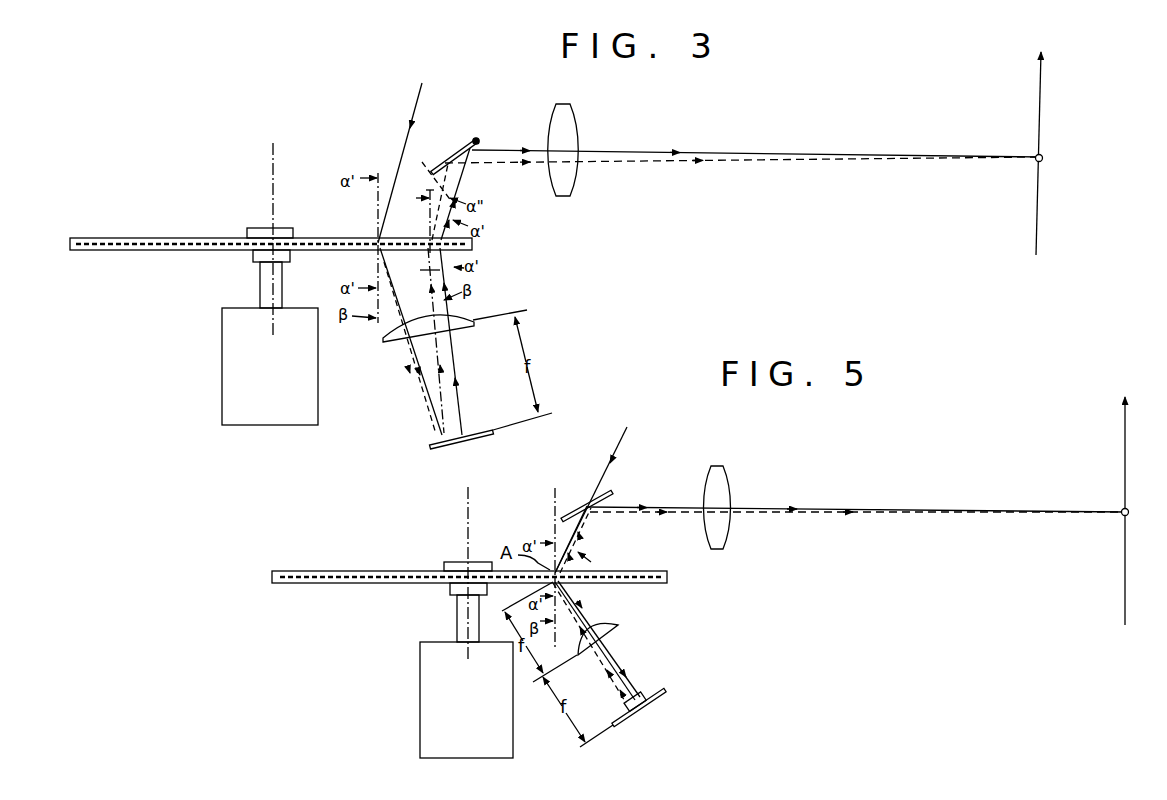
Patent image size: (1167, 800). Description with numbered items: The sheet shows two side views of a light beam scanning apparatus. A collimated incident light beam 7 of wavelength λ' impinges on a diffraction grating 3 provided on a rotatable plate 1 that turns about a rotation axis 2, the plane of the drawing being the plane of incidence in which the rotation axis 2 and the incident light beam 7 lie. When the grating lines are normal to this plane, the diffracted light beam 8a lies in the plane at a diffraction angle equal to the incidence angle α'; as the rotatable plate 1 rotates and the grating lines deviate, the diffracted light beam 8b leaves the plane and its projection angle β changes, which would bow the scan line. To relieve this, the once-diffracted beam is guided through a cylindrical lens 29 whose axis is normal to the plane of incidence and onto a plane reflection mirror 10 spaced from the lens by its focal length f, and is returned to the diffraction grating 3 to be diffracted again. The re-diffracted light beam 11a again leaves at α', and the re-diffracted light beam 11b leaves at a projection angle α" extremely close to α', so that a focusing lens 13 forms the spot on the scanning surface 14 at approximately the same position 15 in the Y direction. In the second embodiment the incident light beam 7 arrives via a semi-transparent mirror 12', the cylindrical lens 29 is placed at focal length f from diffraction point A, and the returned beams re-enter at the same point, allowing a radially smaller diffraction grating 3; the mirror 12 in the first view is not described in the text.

In FIG. 3, the rotatable plate 1 is at (471, 245).
In FIG. 5, the rotatable plate 1 is at (272, 578).
In FIG. 3, the rotation axis 2 is at (268, 162).
In FIG. 5, the rotation axis 2 is at (465, 507).
In FIG. 3, the diffraction grating 3 is at (395, 239).
In FIG. 5, the diffraction grating 3 is at (612, 572).
In FIG. 3, the incident light beam 7 is at (417, 103).
In FIG. 5, the incident light beam 7 is at (620, 442).
In FIG. 3, the light beam 8a is at (468, 294).
In FIG. 5, the light beam 8a is at (585, 613).
In FIG. 3, the light beam 8b is at (476, 302).
In FIG. 5, the light beam 8b is at (588, 620).
In FIG. 3, the plane reflection mirror 10 is at (493, 436).
In FIG. 5, the plane reflection mirror 10 is at (665, 692).
In FIG. 3, the light beam 11a is at (462, 168).
In FIG. 5, the light beam 11a is at (573, 527).
In FIG. 3, the light beam 11b is at (723, 190).
In FIG. 5, the light beam 11b is at (558, 570).
In FIG. 3, the deflecting mirror 12 is at (459, 133).
In FIG. 5, the semi-transparent mirror 12' is at (584, 486).
In FIG. 3, the focusing lens 13 is at (570, 107).
In FIG. 5, the focusing lens 13 is at (727, 481).
In FIG. 3, the scanning surface 14 is at (1040, 82).
In FIG. 5, the scanning surface 14 is at (1125, 447).
In FIG. 3, the position 15 is at (1035, 162).
In FIG. 5, the position 15 is at (1120, 515).
In FIG. 3, the cylindrical lens 29 is at (470, 327).
In FIG. 5, the cylindrical lens 29 is at (615, 637).